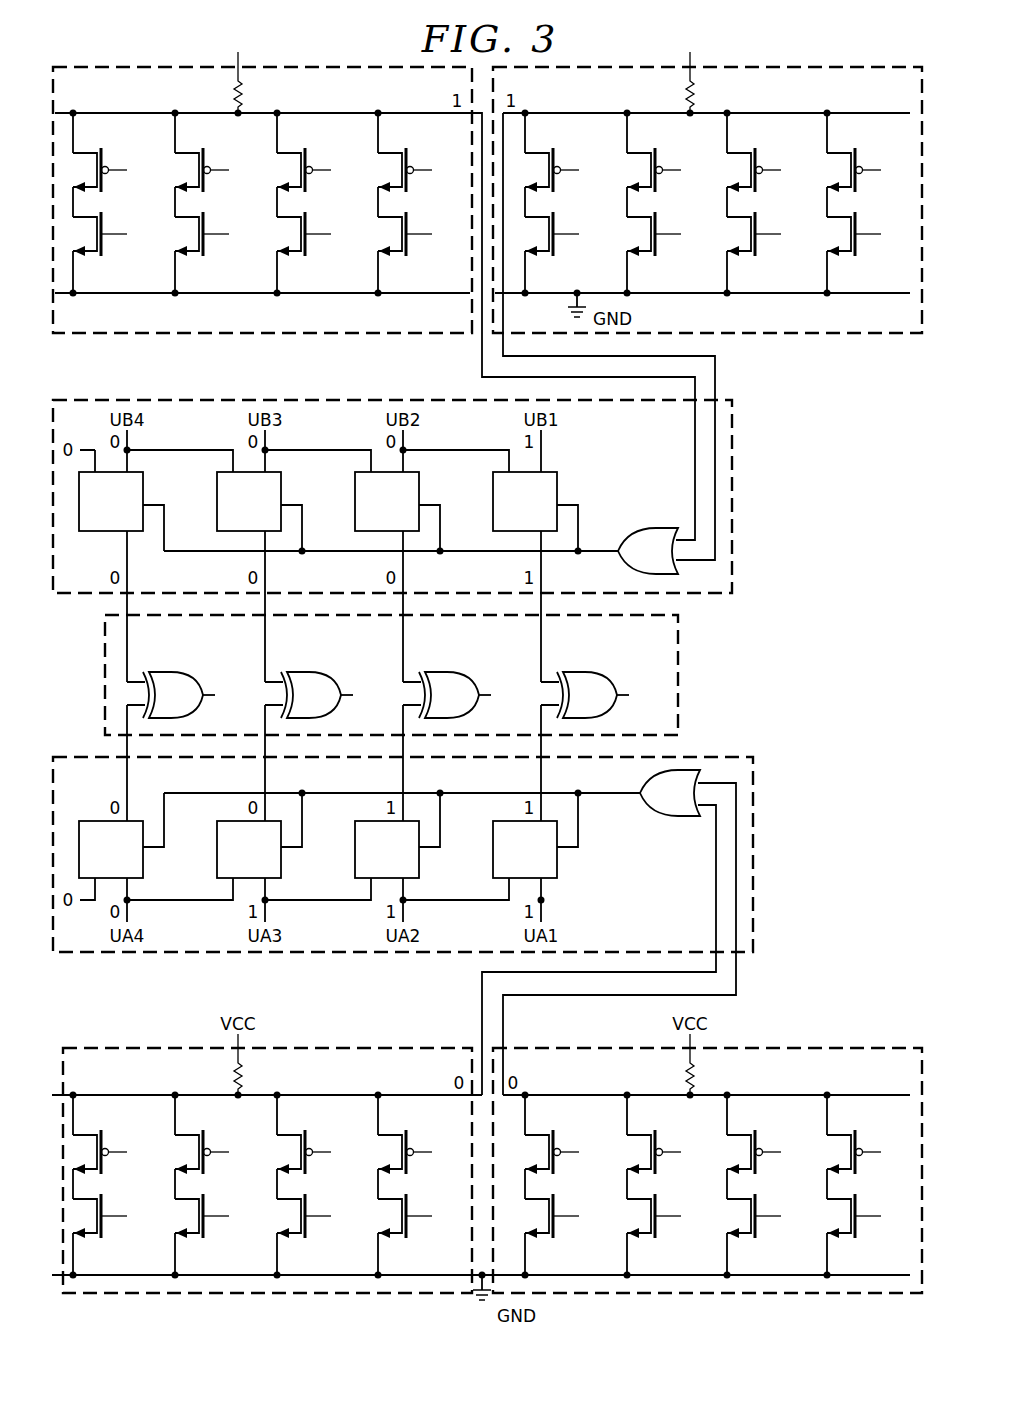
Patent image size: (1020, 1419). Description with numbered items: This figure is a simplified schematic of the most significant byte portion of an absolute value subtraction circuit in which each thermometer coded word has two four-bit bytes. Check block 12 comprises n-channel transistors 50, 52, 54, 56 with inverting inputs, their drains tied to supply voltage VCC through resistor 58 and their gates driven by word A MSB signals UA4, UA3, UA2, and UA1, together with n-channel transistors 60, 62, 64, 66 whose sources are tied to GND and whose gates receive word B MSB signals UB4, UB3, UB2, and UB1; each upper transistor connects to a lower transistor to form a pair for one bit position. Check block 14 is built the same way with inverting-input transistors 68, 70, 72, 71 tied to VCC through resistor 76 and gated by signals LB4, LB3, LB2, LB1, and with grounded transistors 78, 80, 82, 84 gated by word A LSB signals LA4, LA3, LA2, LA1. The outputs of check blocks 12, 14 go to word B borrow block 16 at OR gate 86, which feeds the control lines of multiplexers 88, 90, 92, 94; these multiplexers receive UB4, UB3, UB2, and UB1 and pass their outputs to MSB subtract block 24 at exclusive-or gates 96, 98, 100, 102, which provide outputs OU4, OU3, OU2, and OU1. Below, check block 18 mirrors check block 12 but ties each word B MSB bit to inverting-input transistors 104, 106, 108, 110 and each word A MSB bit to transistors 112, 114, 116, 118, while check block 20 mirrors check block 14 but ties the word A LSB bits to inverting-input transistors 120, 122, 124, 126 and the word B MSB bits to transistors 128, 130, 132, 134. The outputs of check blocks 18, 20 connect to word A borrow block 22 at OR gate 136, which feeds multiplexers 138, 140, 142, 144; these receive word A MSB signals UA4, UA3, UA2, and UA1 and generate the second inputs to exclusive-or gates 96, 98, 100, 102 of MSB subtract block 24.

The check block 12 is at (178, 67).
The check block 14 is at (778, 67).
The word B borrow block 16 is at (340, 400).
The check block 18 is at (242, 1293).
The check block 20 is at (718, 1293).
The word A borrow block 22 is at (335, 952).
The MSB subtract block 24 is at (105, 650).
The n-channel transistor 50 is at (101, 150).
The n-channel transistor 52 is at (203, 150).
The n-channel transistor 54 is at (305, 150).
The n-channel transistor 56 is at (406, 150).
The resistor 58 is at (232, 94).
The n-channel transistor 60 is at (100, 254).
The n-channel transistor 62 is at (202, 254).
The n-channel transistor 64 is at (304, 254).
The n-channel transistor 66 is at (405, 254).
The n-channel transistor 68 is at (553, 150).
The n-channel transistor 70 is at (655, 150).
The n-channel transistor 72 is at (755, 150).
The p-channel transistor LB1 71 is at (855, 150).
The resistor 76 is at (699, 94).
The n-channel transistor 78 is at (552, 254).
The n-channel transistor 80 is at (654, 254).
The n-channel transistor 82 is at (754, 254).
The n-channel transistor 84 is at (854, 254).
The OR gate 86 is at (662, 528).
The multiplexer 88 is at (143, 492).
The multiplexer 90 is at (281, 492).
The multiplexer 92 is at (419, 492).
The multiplexer 94 is at (557, 492).
The exclusive-or gate 96 is at (165, 672).
The exclusive-or gate 98 is at (303, 672).
The exclusive-or gate 100 is at (441, 672).
The exclusive-or gate 102 is at (579, 672).
The n-channel transistor 104 is at (101, 1132).
The n-channel transistor 106 is at (203, 1132).
The n-channel transistor 108 is at (305, 1132).
The n-channel transistor 110 is at (406, 1132).
The n-channel transistor 112 is at (100, 1236).
The n-channel transistor 114 is at (202, 1236).
The n-channel transistor 116 is at (304, 1236).
The n-channel transistor 118 is at (405, 1236).
The n-channel transistor 120 is at (553, 1132).
The n-channel transistor 122 is at (655, 1132).
The n-channel transistor 124 is at (755, 1132).
The n-channel transistor 126 is at (855, 1132).
The n-channel transistor 128 is at (552, 1236).
The n-channel transistor 130 is at (654, 1236).
The n-channel transistor 132 is at (754, 1236).
The n-channel transistor 134 is at (854, 1236).
The OR gate 136 is at (683, 816).
The multiplexer 138 is at (143, 858).
The multiplexer 140 is at (281, 858).
The multiplexer 142 is at (419, 858).
The multiplexer 144 is at (557, 858).